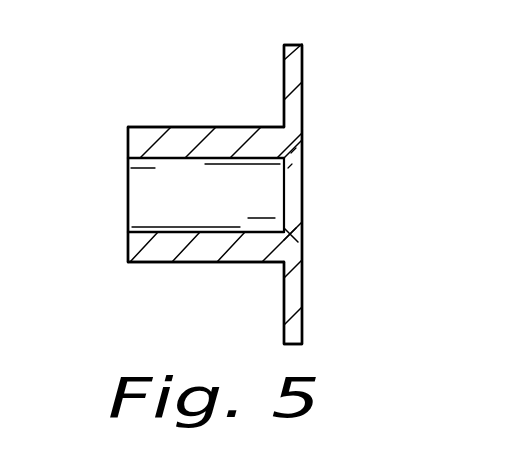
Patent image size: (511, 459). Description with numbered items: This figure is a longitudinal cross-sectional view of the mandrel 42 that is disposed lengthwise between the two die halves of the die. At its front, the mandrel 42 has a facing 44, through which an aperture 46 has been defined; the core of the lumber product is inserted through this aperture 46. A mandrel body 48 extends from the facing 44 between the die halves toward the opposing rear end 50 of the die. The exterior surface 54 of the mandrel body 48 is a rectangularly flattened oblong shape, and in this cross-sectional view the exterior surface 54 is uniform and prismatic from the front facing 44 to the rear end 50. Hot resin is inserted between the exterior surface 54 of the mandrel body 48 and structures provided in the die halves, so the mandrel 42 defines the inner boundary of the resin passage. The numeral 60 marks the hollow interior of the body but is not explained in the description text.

The mandrel 42 is at (328, 299).
The facing 44 is at (294, 69).
The aperture 46 is at (289, 231).
The mandrel body 48 is at (193, 137).
The rear end 50 is at (126, 143).
The exterior surface 54 is at (194, 263).
The bore 60 is at (214, 207).